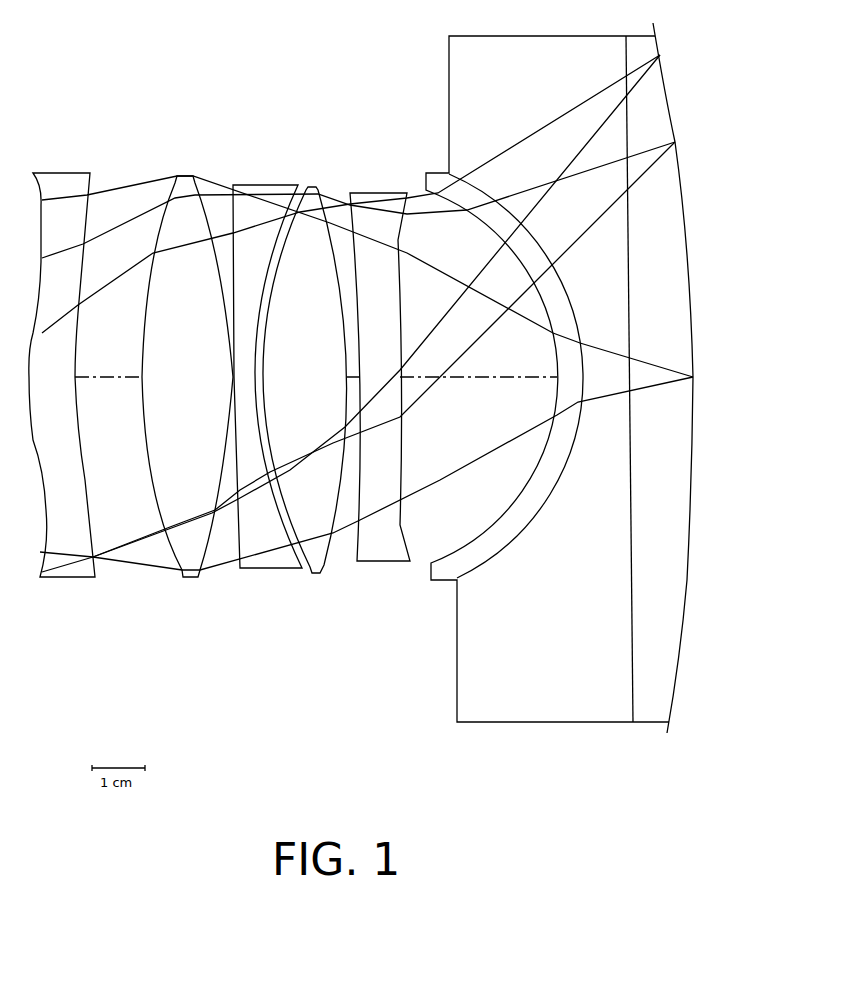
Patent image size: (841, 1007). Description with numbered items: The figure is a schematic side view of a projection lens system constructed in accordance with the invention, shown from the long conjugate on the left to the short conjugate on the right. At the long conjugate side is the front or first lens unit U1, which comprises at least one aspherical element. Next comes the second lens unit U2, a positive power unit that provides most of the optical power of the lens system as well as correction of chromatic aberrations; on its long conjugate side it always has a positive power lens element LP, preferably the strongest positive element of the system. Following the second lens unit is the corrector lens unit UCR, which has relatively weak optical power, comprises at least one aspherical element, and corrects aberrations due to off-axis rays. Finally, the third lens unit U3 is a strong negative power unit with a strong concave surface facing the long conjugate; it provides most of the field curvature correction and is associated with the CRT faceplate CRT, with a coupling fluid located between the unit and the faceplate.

The first lens unit U1 is at (27, 584).
The second lens unit U2 is at (244, 419).
The positive power lens element LP is at (205, 389).
The corrector lens unit UCR is at (348, 584).
The third lens unit U3 is at (431, 736).
The CRT faceplate CRT is at (673, 580).